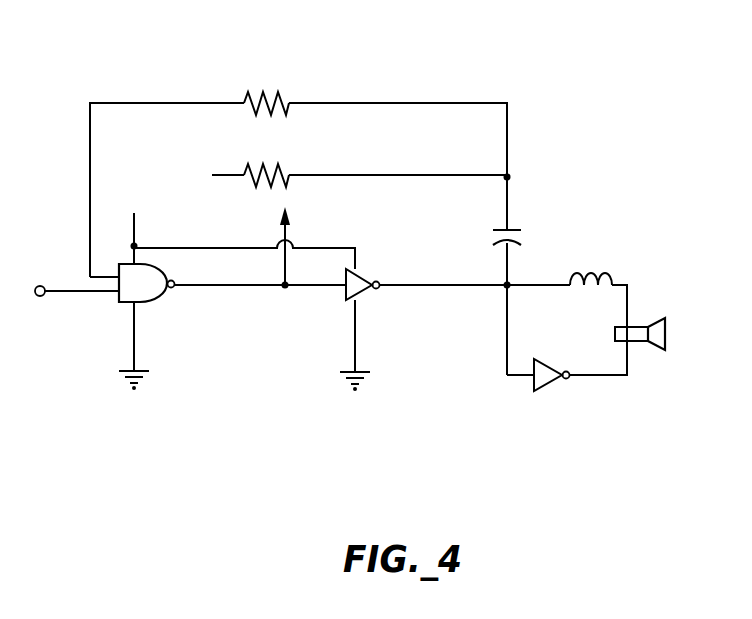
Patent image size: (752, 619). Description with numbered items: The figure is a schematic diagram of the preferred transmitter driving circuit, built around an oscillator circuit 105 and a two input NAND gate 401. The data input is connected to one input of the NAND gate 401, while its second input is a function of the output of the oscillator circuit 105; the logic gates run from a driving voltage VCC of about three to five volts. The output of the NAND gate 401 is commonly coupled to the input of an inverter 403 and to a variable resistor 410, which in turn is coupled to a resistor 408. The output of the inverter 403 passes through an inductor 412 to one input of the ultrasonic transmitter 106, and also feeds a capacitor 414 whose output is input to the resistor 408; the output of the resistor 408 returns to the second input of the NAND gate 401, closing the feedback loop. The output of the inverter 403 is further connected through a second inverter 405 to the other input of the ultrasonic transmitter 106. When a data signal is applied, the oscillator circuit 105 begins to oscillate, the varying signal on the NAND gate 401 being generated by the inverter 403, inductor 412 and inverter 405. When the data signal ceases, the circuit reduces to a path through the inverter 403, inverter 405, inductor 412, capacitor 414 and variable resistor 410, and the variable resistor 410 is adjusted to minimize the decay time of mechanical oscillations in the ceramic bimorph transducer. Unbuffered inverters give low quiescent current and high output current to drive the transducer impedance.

The oscillator circuit 105 is at (188, 42).
The ultrasonic transmitter 106 is at (643, 343).
The two input NAND gate 401 is at (148, 302).
The inverter 403 is at (362, 293).
The inverter 405 is at (550, 382).
The resistor 408 is at (283, 103).
The variable resistor 410 is at (283, 175).
The inductor 412 is at (597, 272).
The capacitor 414 is at (515, 230).